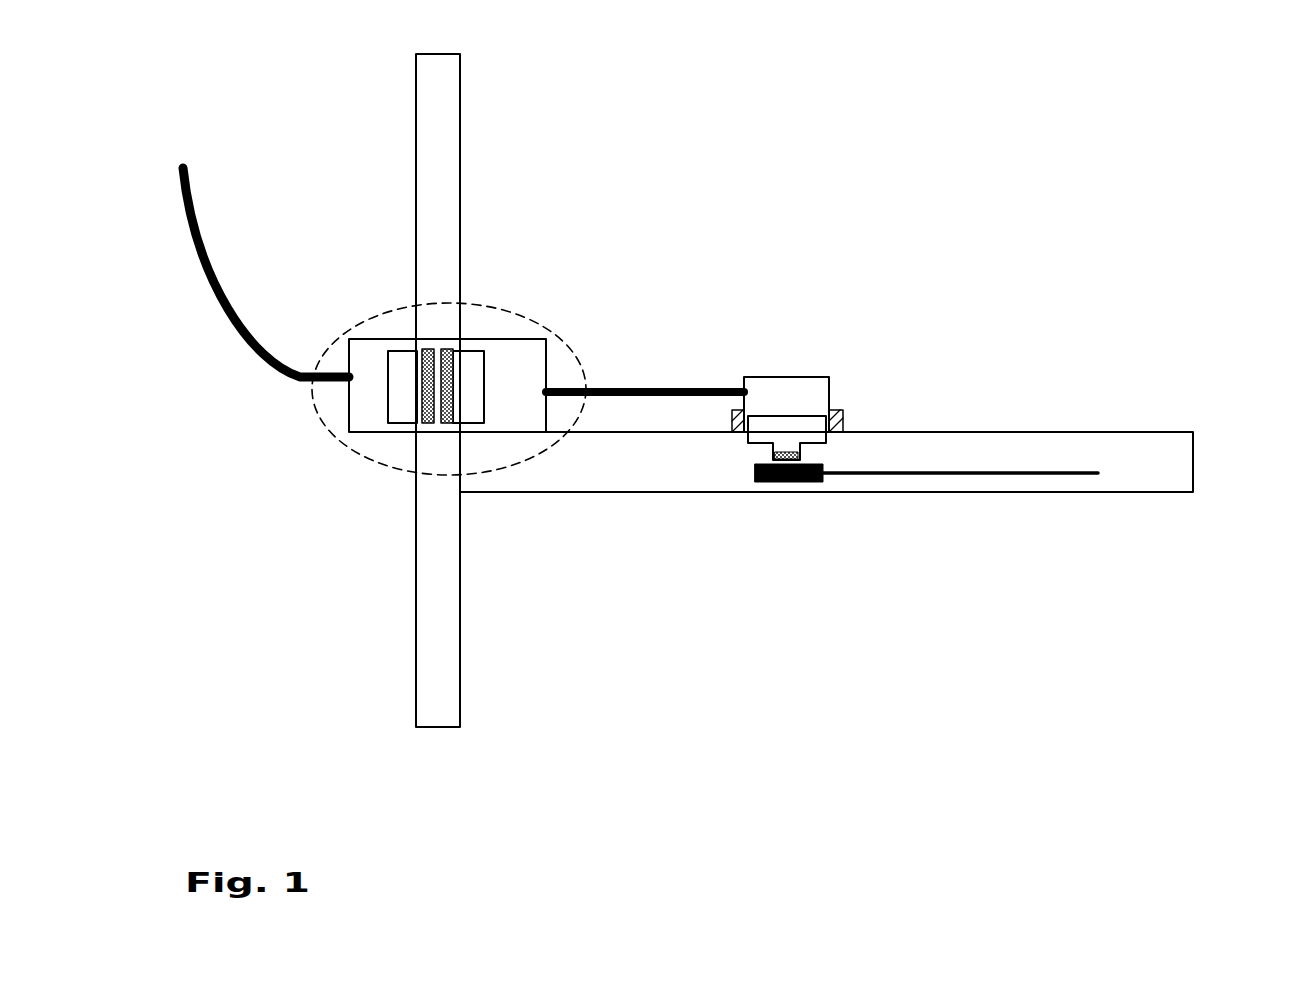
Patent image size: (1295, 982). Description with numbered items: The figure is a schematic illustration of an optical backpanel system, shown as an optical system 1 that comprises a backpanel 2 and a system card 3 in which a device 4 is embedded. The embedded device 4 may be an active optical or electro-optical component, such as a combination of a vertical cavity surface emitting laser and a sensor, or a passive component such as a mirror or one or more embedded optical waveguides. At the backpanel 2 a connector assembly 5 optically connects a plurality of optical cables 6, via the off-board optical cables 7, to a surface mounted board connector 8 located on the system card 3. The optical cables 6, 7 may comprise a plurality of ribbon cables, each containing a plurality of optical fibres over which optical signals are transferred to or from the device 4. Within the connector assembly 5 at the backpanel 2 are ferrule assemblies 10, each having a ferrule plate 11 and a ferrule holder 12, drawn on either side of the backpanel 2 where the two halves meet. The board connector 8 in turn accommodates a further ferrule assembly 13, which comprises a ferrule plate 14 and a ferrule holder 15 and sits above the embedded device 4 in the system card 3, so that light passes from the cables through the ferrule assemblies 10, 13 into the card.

The optical system 1 is at (812, 226).
The backpanel 2 is at (460, 83).
The system card 3 is at (1193, 460).
The embedded device 4 is at (783, 483).
The connector assembly 5 is at (320, 422).
The optical cables 6 is at (188, 213).
The off-board optical cables 7 is at (655, 390).
The surface mounted board connector 8 is at (790, 392).
The ferrule assemblies 10 is at (396, 456).
The ferrule plate 11 is at (428, 367).
The ferrule holder 12 is at (400, 372).
The further ferrule assembly 13 is at (738, 460).
The ferrule plate 14 is at (800, 457).
The ferrule holder 15 is at (812, 413).